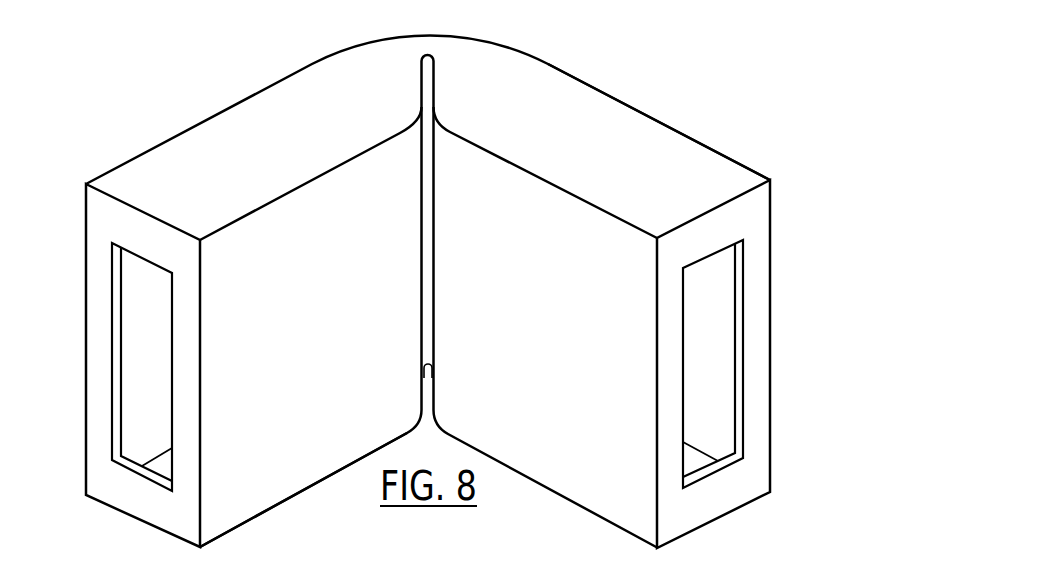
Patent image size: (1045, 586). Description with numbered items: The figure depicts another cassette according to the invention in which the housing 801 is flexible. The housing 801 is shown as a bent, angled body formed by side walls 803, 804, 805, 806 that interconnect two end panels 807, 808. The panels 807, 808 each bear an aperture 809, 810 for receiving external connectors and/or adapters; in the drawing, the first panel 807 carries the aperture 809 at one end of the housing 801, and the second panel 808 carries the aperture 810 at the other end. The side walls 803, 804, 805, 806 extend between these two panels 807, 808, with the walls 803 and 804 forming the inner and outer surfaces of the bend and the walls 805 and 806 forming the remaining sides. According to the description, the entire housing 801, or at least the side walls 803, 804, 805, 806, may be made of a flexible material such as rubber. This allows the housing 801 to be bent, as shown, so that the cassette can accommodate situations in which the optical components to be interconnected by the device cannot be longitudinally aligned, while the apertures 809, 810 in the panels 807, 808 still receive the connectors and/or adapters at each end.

The housing 801 is at (630, 63).
The side wall 803 is at (283, 475).
The side wall 804 is at (718, 175).
The side wall 805 is at (712, 323).
The side wall 806 is at (161, 463).
The panel 807 is at (100, 210).
The panel 808 is at (730, 493).
The aperture 809 is at (115, 297).
The aperture 810 is at (741, 371).